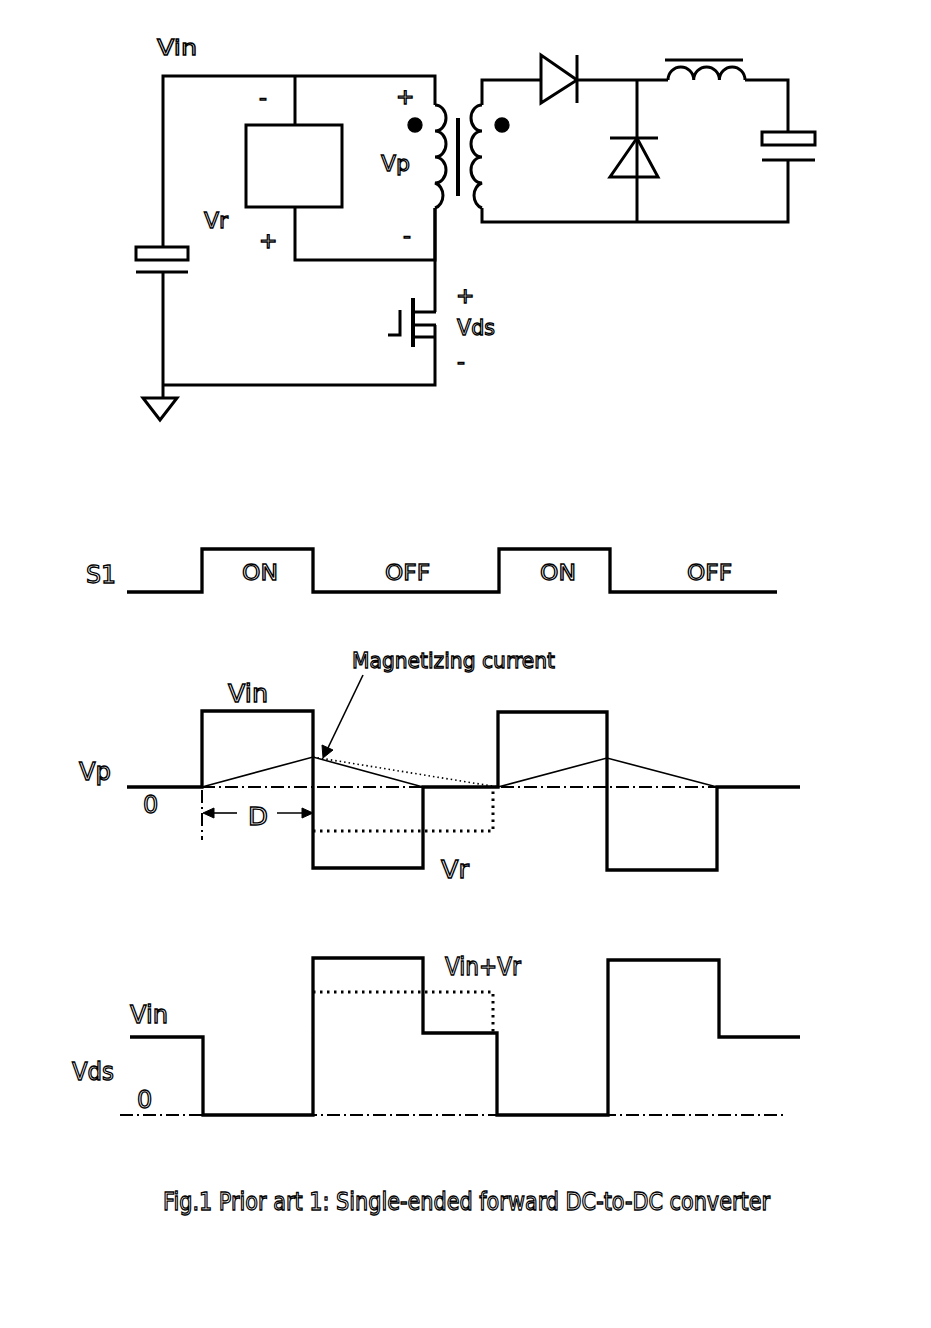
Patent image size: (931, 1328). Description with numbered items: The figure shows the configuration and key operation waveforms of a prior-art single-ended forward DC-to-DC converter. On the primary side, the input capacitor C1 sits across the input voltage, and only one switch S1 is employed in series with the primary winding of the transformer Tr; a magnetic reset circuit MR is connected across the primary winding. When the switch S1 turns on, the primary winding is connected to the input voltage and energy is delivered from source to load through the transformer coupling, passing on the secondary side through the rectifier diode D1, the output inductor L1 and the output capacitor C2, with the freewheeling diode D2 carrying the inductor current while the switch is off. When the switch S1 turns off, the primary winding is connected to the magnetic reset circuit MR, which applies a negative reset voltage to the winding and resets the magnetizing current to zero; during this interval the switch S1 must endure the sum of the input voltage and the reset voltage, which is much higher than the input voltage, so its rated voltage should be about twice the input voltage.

The input capacitor C1 is at (128, 236).
The magnetic reset circuit MR is at (294, 166).
The transformer Tr is at (458, 117).
The switch S1 is at (384, 280).
The rectifier diode D1 is at (564, 61).
The freewheeling diode D2 is at (605, 161).
The output inductor L1 is at (705, 53).
The output capacitor C2 is at (807, 174).